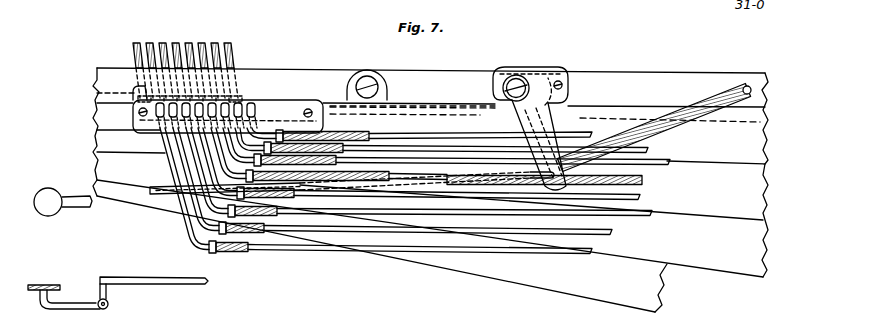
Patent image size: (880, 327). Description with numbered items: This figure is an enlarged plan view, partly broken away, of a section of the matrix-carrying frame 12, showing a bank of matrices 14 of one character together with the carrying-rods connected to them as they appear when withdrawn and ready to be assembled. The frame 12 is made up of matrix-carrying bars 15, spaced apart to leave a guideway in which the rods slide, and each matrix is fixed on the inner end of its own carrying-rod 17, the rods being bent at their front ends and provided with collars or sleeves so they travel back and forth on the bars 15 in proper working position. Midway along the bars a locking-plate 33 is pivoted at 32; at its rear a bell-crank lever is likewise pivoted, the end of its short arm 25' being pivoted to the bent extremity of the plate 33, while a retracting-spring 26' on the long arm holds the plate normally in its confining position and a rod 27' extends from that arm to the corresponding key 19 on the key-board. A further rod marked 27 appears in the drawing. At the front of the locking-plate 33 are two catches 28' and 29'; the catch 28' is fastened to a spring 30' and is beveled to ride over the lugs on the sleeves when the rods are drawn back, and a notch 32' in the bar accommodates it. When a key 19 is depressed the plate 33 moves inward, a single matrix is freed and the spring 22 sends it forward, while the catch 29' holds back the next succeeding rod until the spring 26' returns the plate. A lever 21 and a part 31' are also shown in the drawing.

The matrix-carrying frame 12 is at (432, 190).
The matrices 14 is at (227, 44).
The matrix-carrying bars 15 is at (95, 95).
The carrying-rod 17 is at (644, 181).
The keys 19 is at (44, 216).
The lever 21 is at (530, 128).
The spring 22 is at (372, 133).
The short arm of bell-crank lever 25' is at (583, 85).
The retracting-spring 26' is at (654, 128).
The shaft 27 is at (336, 185).
The rod 27' is at (124, 293).
The catch 28' is at (206, 118).
The catch 29' is at (188, 127).
The spring 30' is at (228, 116).
The key shoulders 31' is at (204, 95).
The pivot 32 is at (367, 75).
The notch or opening 32' is at (114, 70).
The locking-plate 33 is at (400, 106).